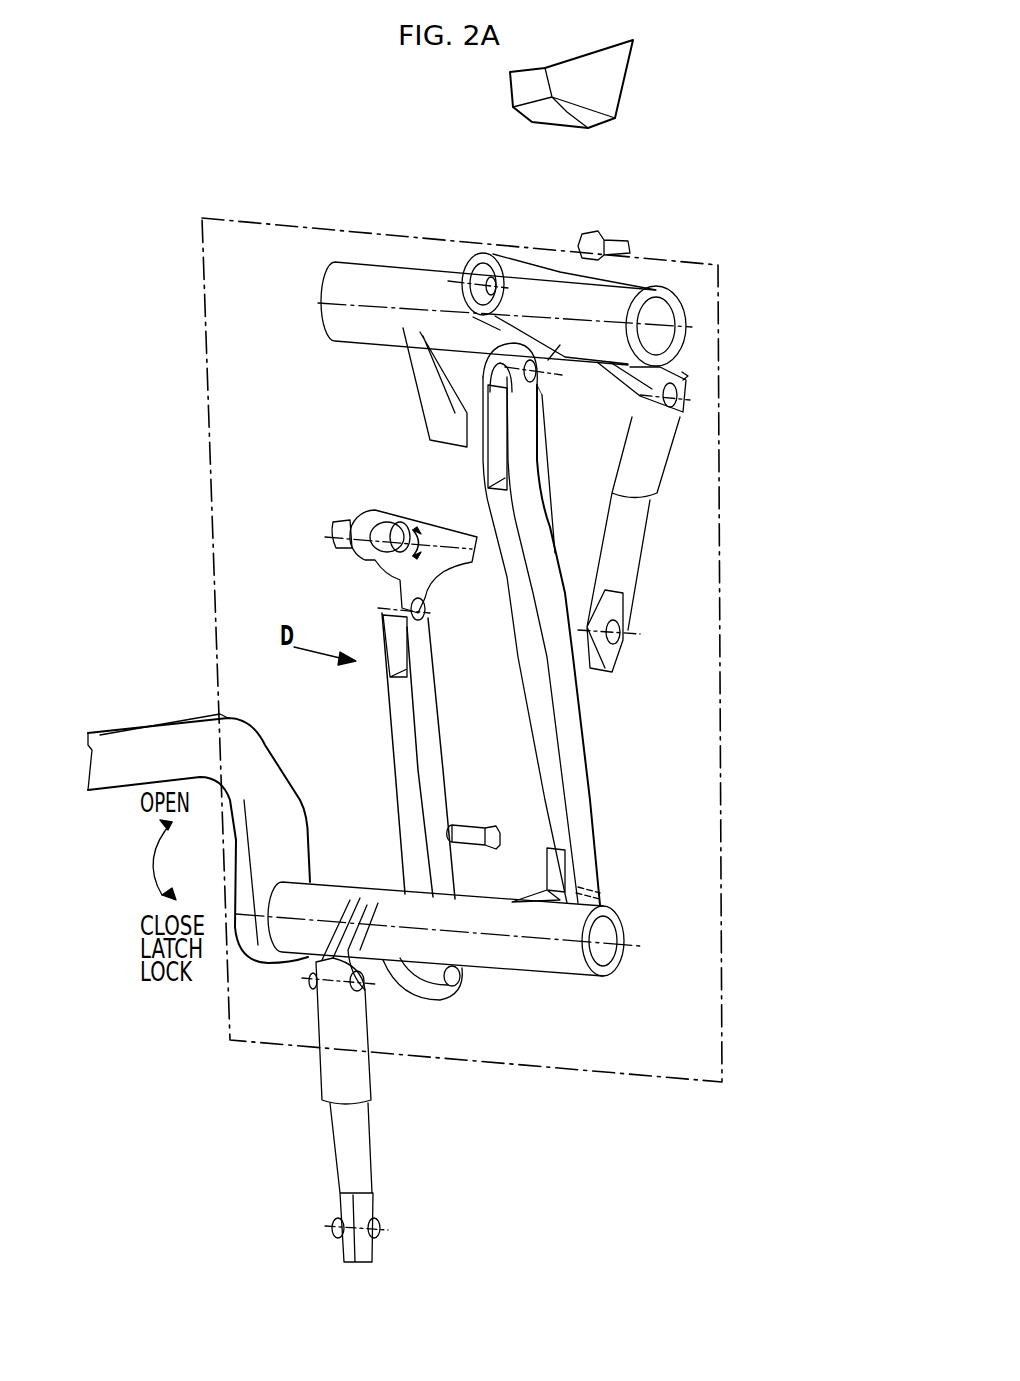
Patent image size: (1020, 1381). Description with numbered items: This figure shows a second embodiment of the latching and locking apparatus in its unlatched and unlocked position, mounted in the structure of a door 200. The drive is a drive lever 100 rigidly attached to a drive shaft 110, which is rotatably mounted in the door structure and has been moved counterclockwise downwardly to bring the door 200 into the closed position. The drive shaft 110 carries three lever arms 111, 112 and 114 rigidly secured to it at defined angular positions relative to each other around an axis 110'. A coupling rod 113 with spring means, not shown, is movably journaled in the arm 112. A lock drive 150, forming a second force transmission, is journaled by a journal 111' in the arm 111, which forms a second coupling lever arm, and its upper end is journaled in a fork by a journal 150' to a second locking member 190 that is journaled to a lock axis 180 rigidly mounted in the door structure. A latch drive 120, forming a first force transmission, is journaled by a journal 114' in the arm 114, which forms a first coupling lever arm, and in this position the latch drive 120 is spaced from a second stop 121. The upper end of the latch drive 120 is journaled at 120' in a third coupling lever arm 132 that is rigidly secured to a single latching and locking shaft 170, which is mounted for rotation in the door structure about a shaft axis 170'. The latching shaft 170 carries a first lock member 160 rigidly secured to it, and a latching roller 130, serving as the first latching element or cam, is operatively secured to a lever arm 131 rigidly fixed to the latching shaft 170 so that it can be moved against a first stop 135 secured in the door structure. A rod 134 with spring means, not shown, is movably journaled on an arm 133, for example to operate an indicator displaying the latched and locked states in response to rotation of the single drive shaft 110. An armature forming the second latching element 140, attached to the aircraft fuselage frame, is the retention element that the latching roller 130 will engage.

The drive lever 100 is at (145, 748).
The drive shaft 110 is at (438, 963).
The axis 110' is at (635, 938).
The lever arm 111 is at (435, 1006).
The journal 111' is at (487, 986).
The lever arm 112 is at (372, 980).
The coupling rod 113 is at (365, 1129).
The lever arm 114 is at (534, 868).
The journal 114' is at (623, 887).
The latch drive 120 is at (569, 624).
The journal 120' is at (569, 430).
The second stop 121 is at (471, 828).
The latching roller 130 is at (478, 258).
The lever arm 131 is at (522, 280).
The third coupling lever arm 132 is at (546, 378).
The arm 133 is at (668, 376).
The rod 134 is at (633, 541).
The first stop 135 is at (620, 242).
The second latching element 140 is at (618, 84).
The lock drive 150 is at (441, 756).
The journal 150' is at (436, 621).
The first lock member 160 is at (430, 404).
The latching and locking shaft 170 is at (475, 309).
The shaft axis 170' is at (671, 324).
The lock axis 180 is at (338, 546).
The second locking member 190 is at (437, 540).
The door 200 is at (210, 516).